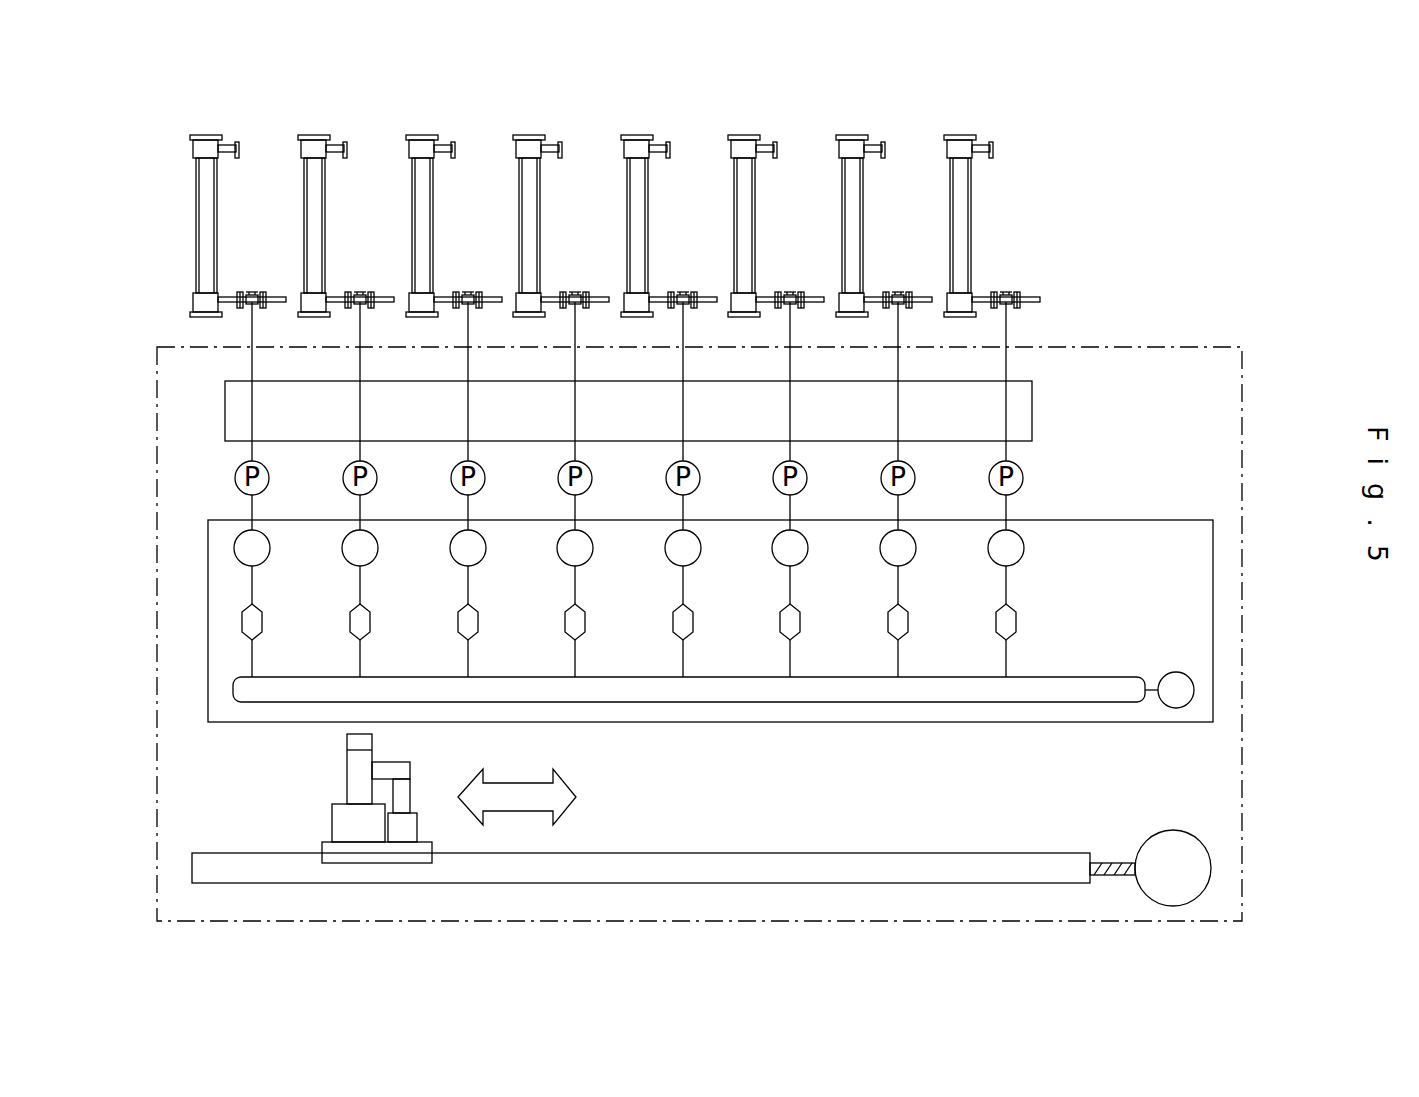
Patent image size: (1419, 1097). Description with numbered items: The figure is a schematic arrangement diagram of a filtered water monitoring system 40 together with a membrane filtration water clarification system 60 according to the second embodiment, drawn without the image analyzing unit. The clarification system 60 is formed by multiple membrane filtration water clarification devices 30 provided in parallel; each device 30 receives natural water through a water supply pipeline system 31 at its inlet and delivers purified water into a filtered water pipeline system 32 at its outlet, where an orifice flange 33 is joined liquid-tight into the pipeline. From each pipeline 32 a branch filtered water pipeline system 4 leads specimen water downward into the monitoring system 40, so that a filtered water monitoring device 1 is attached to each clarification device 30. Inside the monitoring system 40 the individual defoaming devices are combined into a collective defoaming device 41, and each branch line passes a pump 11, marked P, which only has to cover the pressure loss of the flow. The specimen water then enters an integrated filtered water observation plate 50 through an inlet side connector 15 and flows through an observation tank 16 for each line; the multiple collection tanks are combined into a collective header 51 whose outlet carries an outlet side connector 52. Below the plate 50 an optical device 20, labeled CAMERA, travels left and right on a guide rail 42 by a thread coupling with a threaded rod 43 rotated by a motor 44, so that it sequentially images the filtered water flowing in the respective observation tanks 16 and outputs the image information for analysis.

The filtered water monitoring device 1 is at (227, 453).
The branch filtered water pipeline system 4 is at (252, 327).
The pump 11 is at (235, 478).
The inlet side connector 15 is at (234, 548).
The observation tank 16 is at (242, 620).
The optical device 20 is at (432, 801).
The membrane filtration water clarification device 30 is at (194, 198).
The water supply pipeline system 31 is at (229, 140).
The filtered water pipeline system 32 is at (230, 293).
The orifice flange 33 is at (252, 293).
The filtered water monitoring system 40 is at (1162, 346).
The collective defoaming device 41 is at (1034, 412).
The guide rail 42 is at (749, 853).
The threaded rod 43 is at (1110, 863).
The motor 44 is at (1174, 830).
The integrated filtered water observation plate 50 is at (1125, 520).
The collective header 51 is at (1080, 677).
The outlet side connector 52 is at (1176, 672).
The membrane filtration water clarification system 60 is at (125, 240).